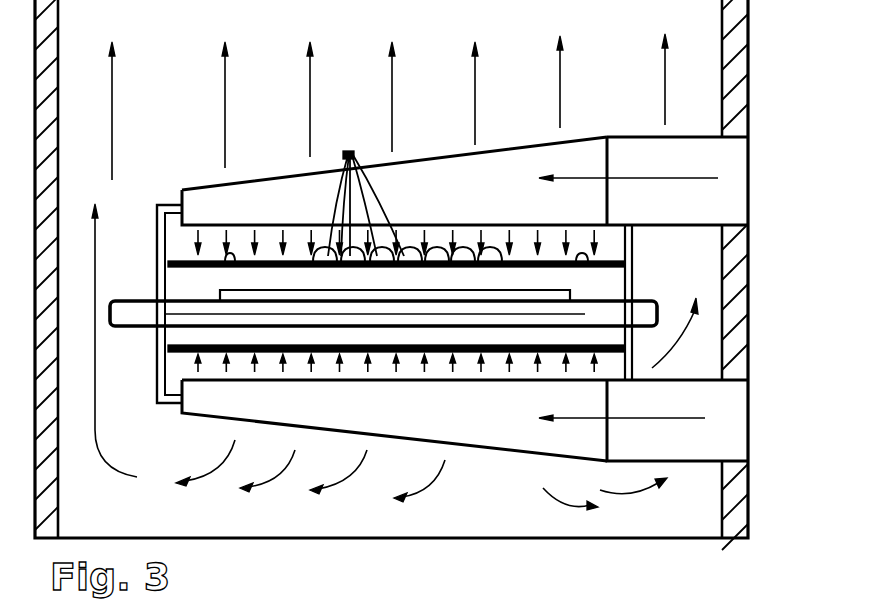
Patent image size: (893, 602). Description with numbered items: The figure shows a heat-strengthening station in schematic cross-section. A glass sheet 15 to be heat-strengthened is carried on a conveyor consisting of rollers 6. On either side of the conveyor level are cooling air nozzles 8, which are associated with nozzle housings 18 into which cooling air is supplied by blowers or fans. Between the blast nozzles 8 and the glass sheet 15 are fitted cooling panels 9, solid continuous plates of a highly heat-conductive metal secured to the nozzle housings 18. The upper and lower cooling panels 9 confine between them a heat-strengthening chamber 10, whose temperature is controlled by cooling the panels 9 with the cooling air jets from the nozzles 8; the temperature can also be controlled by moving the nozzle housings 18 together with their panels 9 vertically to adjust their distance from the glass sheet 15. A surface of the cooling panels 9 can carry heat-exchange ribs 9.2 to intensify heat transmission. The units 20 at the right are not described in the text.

The rollers 6 is at (135, 322).
The cooling air nozzles 8 is at (457, 224).
The cooling panels 9 is at (270, 258).
The heat-exchange ribs 9.2 is at (366, 186).
The heat-strengthening chamber 10 is at (610, 289).
The glass sheet 15 is at (245, 292).
The nozzle housings 18 is at (418, 172).
The fan unit 20 is at (722, 166).